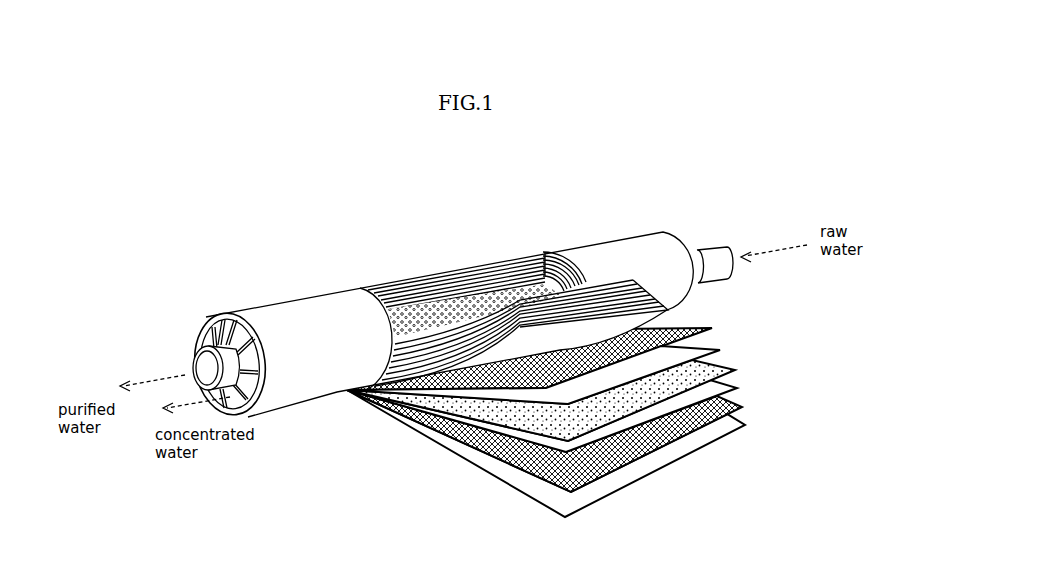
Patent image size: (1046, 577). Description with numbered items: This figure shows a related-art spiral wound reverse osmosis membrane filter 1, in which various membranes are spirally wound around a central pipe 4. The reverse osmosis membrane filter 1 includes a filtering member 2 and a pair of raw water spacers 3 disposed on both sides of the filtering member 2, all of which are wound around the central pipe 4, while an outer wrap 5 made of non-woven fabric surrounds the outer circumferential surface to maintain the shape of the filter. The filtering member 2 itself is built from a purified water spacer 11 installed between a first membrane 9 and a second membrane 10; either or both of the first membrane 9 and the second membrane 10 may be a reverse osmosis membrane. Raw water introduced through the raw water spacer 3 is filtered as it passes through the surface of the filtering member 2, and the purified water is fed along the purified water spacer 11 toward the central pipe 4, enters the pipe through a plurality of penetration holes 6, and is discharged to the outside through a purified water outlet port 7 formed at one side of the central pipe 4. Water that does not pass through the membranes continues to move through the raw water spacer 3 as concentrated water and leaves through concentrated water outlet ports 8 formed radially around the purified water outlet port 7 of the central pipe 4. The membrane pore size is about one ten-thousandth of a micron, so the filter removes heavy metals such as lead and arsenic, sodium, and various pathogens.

The reverse osmosis membrane filter 1 is at (666, 214).
The filtering member 2 is at (586, 388).
The raw water spacer 3 is at (745, 407).
The central pipe 4 is at (412, 318).
The outer wrap 5 is at (746, 425).
The penetration holes 6 is at (457, 310).
The purified water outlet port 7 is at (197, 352).
The concentrated water outlet ports 8 is at (233, 328).
The first membrane 9 is at (738, 388).
The second membrane 10 is at (721, 350).
The purified water spacer 11 is at (736, 370).